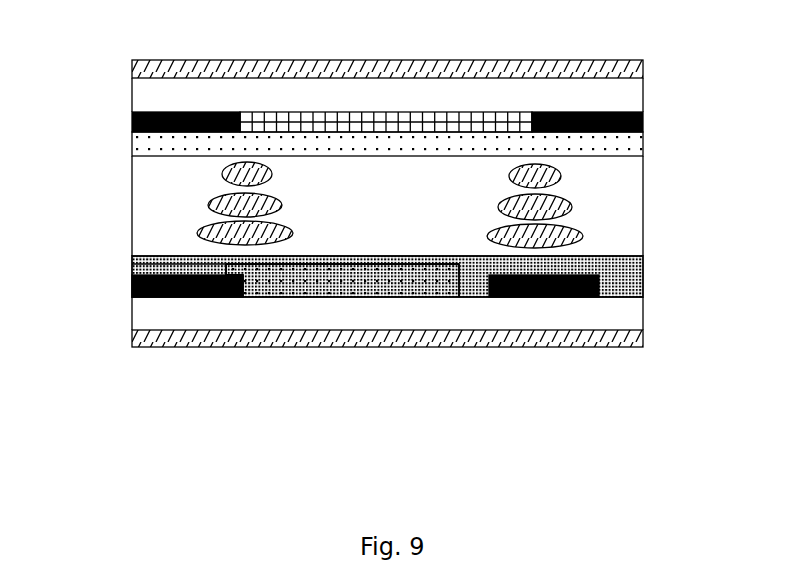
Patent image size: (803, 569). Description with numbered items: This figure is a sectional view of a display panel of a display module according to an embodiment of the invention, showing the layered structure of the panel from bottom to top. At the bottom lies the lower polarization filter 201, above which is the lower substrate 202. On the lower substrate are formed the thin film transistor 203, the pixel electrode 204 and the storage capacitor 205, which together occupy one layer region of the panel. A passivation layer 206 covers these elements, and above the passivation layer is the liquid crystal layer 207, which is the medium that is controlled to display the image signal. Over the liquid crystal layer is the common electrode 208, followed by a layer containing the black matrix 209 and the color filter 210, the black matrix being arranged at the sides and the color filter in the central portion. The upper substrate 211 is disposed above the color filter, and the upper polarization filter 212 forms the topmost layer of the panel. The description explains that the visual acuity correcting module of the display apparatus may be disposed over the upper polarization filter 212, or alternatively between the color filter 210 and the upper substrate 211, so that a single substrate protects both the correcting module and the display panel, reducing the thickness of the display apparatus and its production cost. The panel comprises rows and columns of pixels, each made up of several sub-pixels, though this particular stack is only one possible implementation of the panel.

The lower polarization filter 201 is at (643, 340).
The lower substrate 202 is at (132, 312).
The thin film transistor 203 is at (132, 285).
The pixel electrode 204 is at (343, 276).
The storage capacitor 205 is at (539, 290).
The passivation layer 206 is at (643, 270).
The liquid crystal layer 207 is at (643, 207).
The common electrode 208 is at (643, 146).
The black matrix 209 is at (132, 122).
The color filter 210 is at (332, 122).
The upper substrate 211 is at (643, 93).
The upper polarization filter 212 is at (132, 67).